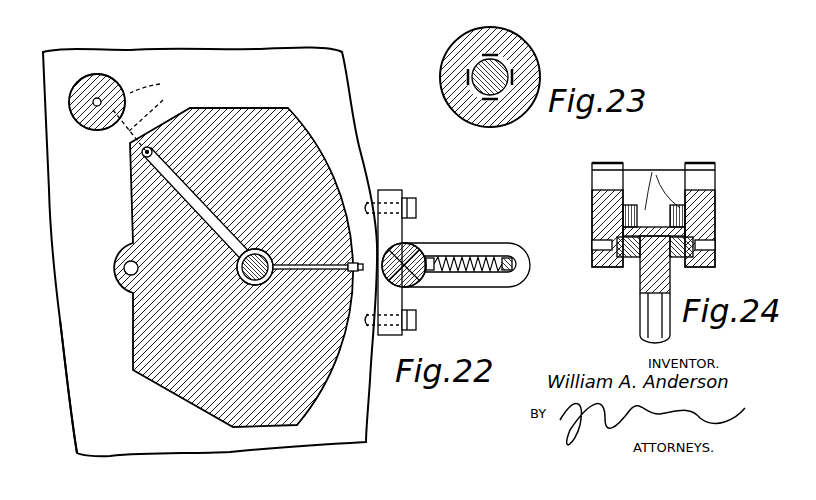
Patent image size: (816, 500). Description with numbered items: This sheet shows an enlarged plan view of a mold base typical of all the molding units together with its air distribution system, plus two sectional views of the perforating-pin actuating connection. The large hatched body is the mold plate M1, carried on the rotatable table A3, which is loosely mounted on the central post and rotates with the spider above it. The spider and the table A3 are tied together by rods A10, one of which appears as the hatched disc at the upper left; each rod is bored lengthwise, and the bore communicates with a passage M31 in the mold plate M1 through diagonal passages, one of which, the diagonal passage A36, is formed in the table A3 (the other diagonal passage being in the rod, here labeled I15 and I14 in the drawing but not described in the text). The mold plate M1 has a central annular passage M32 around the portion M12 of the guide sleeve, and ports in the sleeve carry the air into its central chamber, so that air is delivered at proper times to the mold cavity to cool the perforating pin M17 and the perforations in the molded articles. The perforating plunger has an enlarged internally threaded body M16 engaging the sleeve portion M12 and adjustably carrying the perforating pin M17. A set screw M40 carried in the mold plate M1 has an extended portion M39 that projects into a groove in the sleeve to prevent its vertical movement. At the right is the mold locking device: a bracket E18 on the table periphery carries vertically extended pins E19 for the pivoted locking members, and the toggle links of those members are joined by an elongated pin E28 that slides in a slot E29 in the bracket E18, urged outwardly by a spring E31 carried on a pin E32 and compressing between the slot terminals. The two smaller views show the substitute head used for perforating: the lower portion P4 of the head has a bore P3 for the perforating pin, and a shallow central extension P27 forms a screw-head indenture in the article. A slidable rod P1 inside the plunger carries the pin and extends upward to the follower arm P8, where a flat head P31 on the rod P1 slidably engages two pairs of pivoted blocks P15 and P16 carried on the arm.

In FIG. 22, the mold plate M1 is at (283, 106).
In FIG. 22, the passage M31 is at (193, 200).
In FIG. 22, the central annular passage M32 is at (237, 257).
In FIG. 22, the guide sleeve portion M12 is at (197, 290).
In FIG. 22, the internally threaded body M16 is at (212, 307).
In FIG. 22, the perforating pin M17 is at (215, 317).
In FIG. 22, the rod A10 is at (118, 82).
In FIG. 22, the link I15 is at (153, 82).
In FIG. 22, the diagonal passage A36 is at (149, 119).
In FIG. 22, the disc pivot I14 is at (98, 120).
In FIG. 22, the rotatable table A3 is at (94, 407).
In FIG. 22, the extended portion M39 is at (348, 212).
In FIG. 22, the set screw M40 is at (357, 240).
In FIG. 22, the bracket E18 is at (483, 246).
In FIG. 22, the vertically extended pin E19 is at (410, 246).
In FIG. 22, the spring E31 is at (448, 255).
In FIG. 22, the slot E29 is at (460, 272).
In FIG. 22, the pin E32 is at (430, 272).
In FIG. 22, the elongated pin E28 is at (495, 272).
In FIG. 23, the lower portion of head P4 is at (523, 46).
In FIG. 23, the bore P3 is at (488, 77).
In FIG. 23, the shallow central extension P27 is at (594, 3).
In FIG. 24, the follower arm P8 is at (686, 163).
In FIG. 24, the pivoted blocks P15 is at (650, 196).
In FIG. 24, the flat head P31 is at (716, 224).
In FIG. 24, the pivoted blocks P16 is at (628, 260).
In FIG. 24, the slidable rod P1 is at (650, 303).